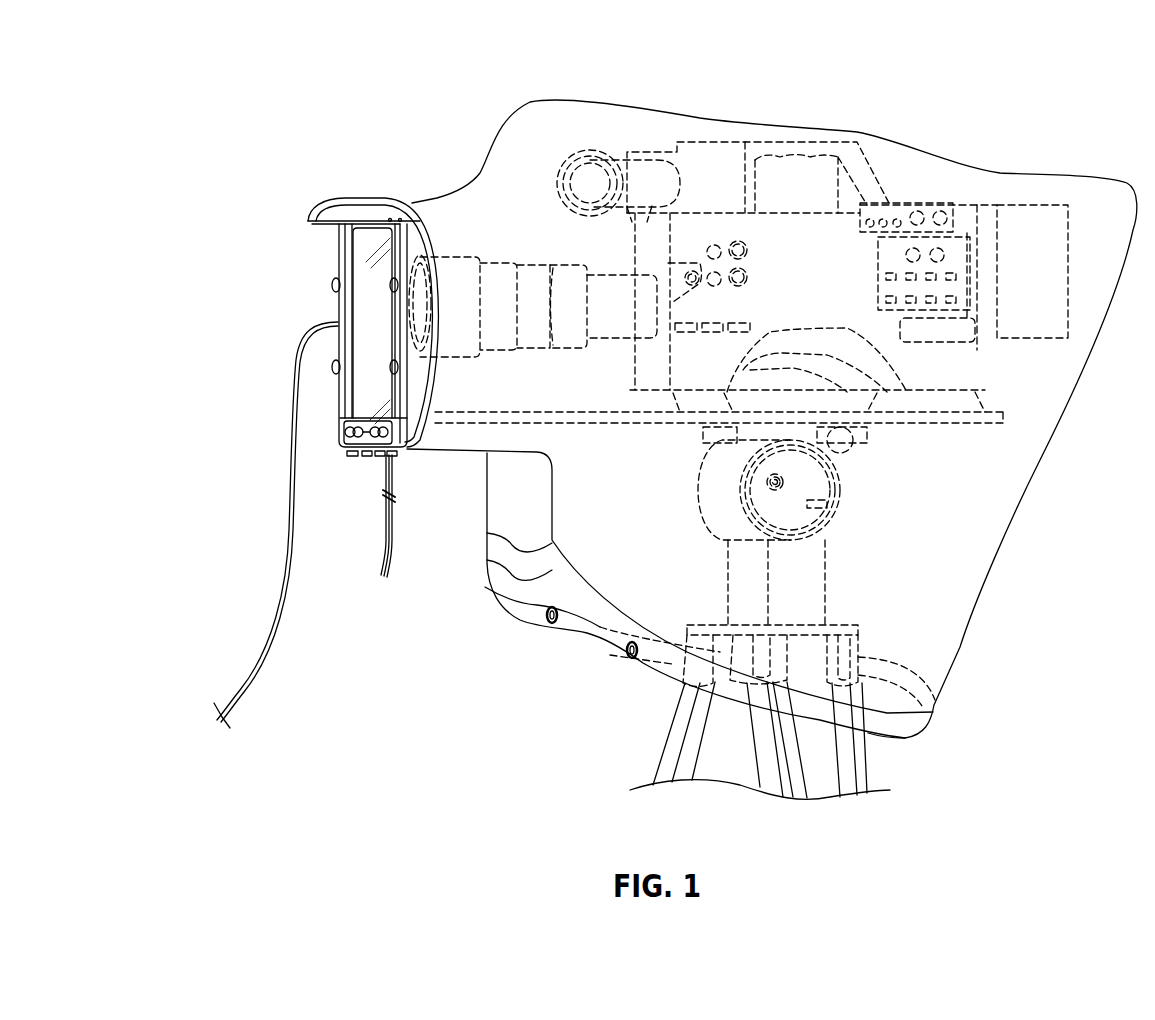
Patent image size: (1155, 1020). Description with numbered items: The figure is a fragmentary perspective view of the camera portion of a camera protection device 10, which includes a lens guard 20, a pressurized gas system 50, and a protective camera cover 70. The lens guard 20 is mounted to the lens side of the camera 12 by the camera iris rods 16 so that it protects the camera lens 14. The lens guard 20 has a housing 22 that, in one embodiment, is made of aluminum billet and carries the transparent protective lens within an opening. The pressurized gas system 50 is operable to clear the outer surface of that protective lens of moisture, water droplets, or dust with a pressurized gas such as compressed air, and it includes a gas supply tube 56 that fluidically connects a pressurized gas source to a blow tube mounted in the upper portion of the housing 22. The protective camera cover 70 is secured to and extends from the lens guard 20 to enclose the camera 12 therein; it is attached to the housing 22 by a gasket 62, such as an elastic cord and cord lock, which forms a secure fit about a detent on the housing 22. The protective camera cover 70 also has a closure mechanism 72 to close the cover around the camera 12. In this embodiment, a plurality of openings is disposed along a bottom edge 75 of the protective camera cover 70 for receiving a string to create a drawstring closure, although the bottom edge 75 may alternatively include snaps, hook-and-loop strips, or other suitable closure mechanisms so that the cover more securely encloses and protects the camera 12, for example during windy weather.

The camera protection device 10 is at (940, 74).
The camera 12 is at (1027, 250).
The camera lens 14 is at (496, 278).
The camera iris rods 16 is at (487, 418).
The lens guard 20 is at (333, 167).
The housing 22 is at (338, 318).
The pressurized gas system 50 is at (237, 565).
The gas supply tube 56 is at (288, 606).
The gasket 62 is at (402, 456).
The protective camera cover 70 is at (1022, 547).
The closure mechanism 72 is at (627, 652).
The bottom edge 75 is at (655, 679).